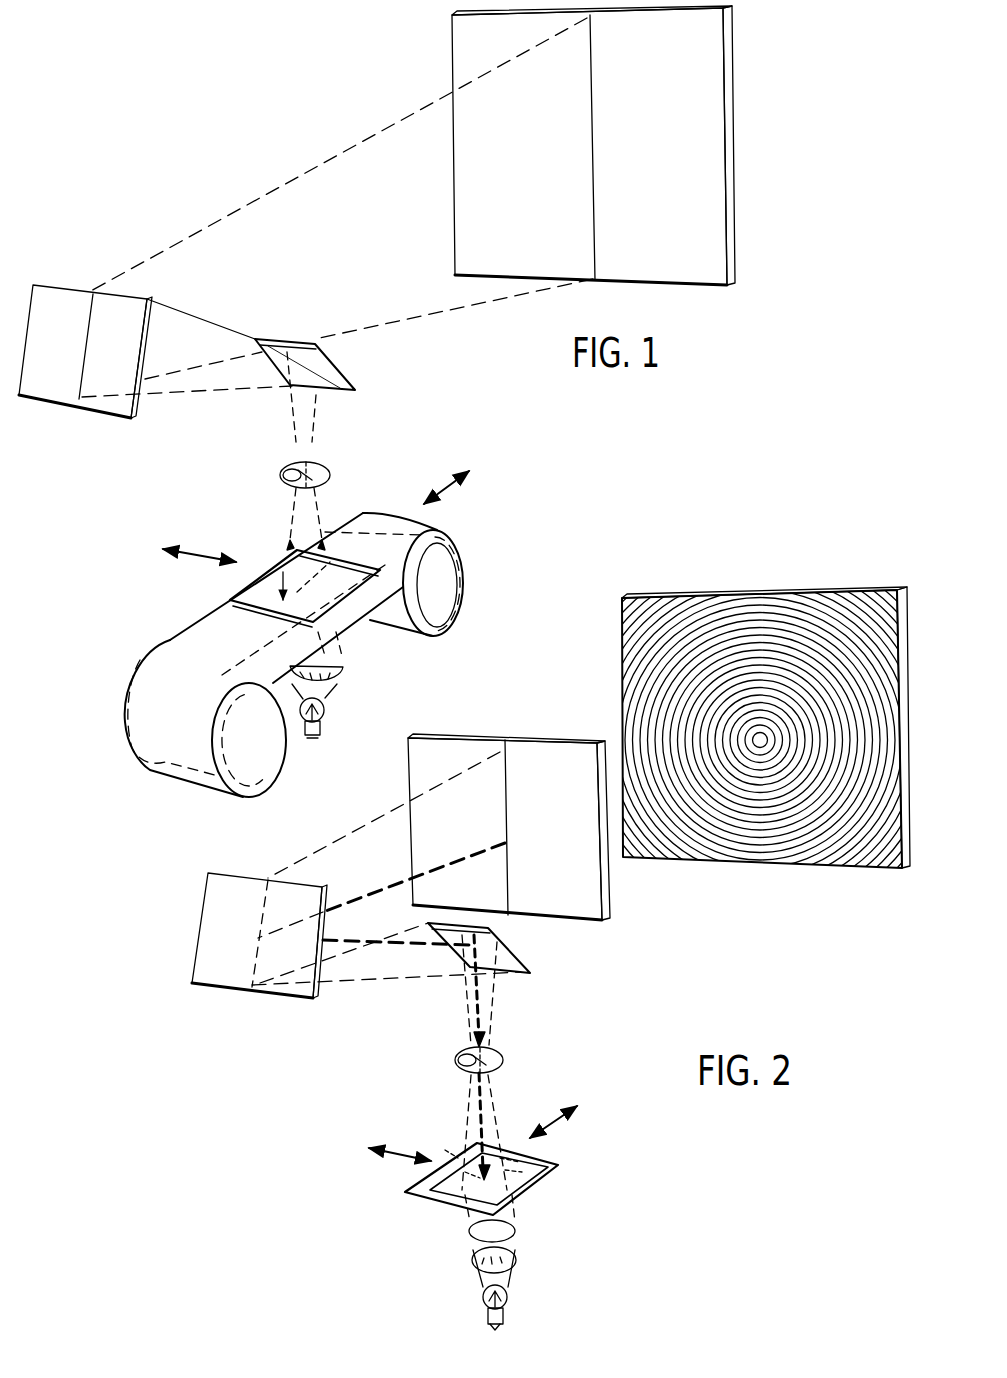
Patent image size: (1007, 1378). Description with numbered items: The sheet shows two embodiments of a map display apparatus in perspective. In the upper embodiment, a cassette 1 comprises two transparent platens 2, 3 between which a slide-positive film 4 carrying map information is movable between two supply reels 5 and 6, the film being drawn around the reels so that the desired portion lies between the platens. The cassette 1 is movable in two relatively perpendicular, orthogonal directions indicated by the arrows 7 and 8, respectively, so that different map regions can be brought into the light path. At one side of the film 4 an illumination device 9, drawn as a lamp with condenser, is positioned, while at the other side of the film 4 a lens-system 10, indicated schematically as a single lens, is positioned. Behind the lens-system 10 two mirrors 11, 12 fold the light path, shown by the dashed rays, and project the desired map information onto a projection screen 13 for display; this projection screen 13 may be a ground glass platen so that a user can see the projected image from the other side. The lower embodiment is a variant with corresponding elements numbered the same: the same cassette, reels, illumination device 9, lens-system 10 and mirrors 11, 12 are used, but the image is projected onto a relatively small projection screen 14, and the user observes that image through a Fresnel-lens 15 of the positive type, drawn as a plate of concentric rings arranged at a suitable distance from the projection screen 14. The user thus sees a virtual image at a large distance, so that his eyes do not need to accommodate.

In FIG. 1, the cassette 1 is at (102, 715).
In FIG. 1, the transparent platen 2 is at (243, 610).
In FIG. 1, the transparent platen 3 is at (258, 575).
In FIG. 1, the slide-positive film 4 is at (172, 650).
In FIG. 2, the slide-positive film 4 is at (560, 1163).
In FIG. 1, the supply reel 5 is at (258, 768).
In FIG. 1, the supply reel 6 is at (440, 607).
In FIG. 1, the arrow 7 is at (165, 550).
In FIG. 2, the arrow 7 is at (392, 1155).
In FIG. 1, the arrow 8 is at (452, 484).
In FIG. 2, the arrow 8 is at (565, 1120).
In FIG. 1, the illumination device 9 is at (352, 672).
In FIG. 2, the illumination device 9 is at (530, 1260).
In FIG. 1, the lens-system 10 is at (322, 466).
In FIG. 2, the lens-system 10 is at (503, 1057).
In FIG. 1, the mirror 11 is at (322, 367).
In FIG. 2, the mirror 11 is at (525, 957).
In FIG. 1, the mirror 12 is at (52, 381).
In FIG. 2, the mirror 12 is at (250, 990).
In FIG. 1, the projection screen 13 is at (700, 115).
In FIG. 2, the projection screen 14 is at (543, 757).
In FIG. 2, the Fresnel-lens 15 is at (753, 620).